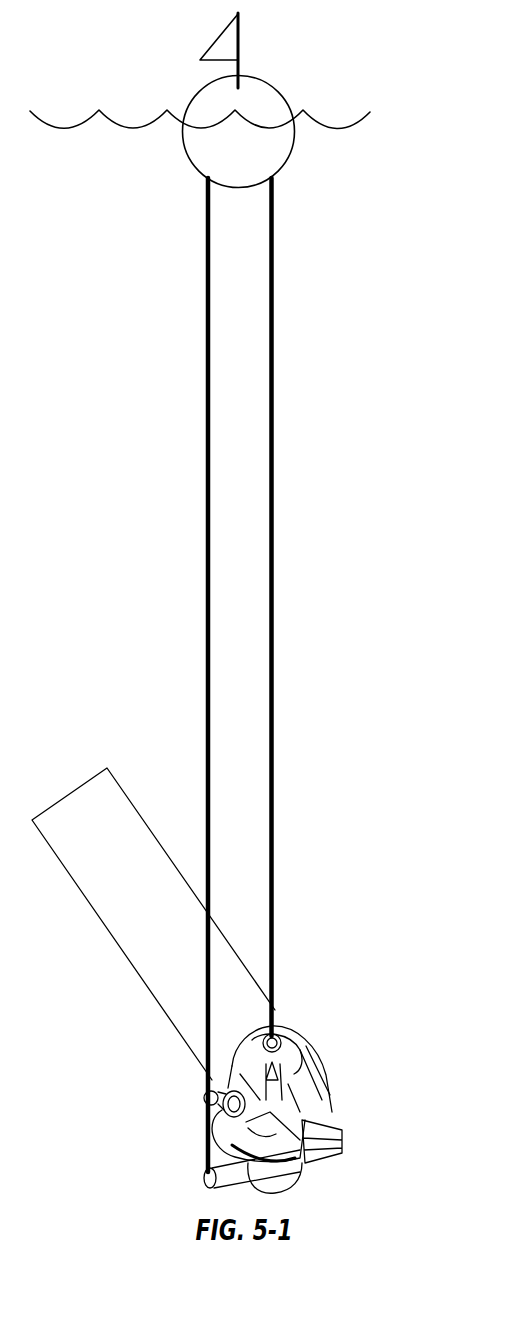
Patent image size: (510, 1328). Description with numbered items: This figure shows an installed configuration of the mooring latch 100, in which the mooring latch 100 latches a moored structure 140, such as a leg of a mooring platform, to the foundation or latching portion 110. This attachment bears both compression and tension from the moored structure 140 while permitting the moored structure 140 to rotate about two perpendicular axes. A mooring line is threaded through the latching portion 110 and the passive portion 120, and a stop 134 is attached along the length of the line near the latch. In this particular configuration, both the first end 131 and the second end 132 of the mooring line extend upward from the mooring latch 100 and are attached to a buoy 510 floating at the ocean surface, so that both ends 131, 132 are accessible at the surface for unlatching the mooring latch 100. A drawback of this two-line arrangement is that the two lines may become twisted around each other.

The buoy 510 is at (224, 155).
The first end of the mooring line 131 is at (205, 232).
The second end of the mooring line 132 is at (268, 232).
The moored structure 140 is at (139, 935).
The mooring latch 100 is at (306, 993).
The stop 134 is at (278, 1043).
The passive portion 120 is at (189, 1102).
The latching portion 110 is at (258, 1187).